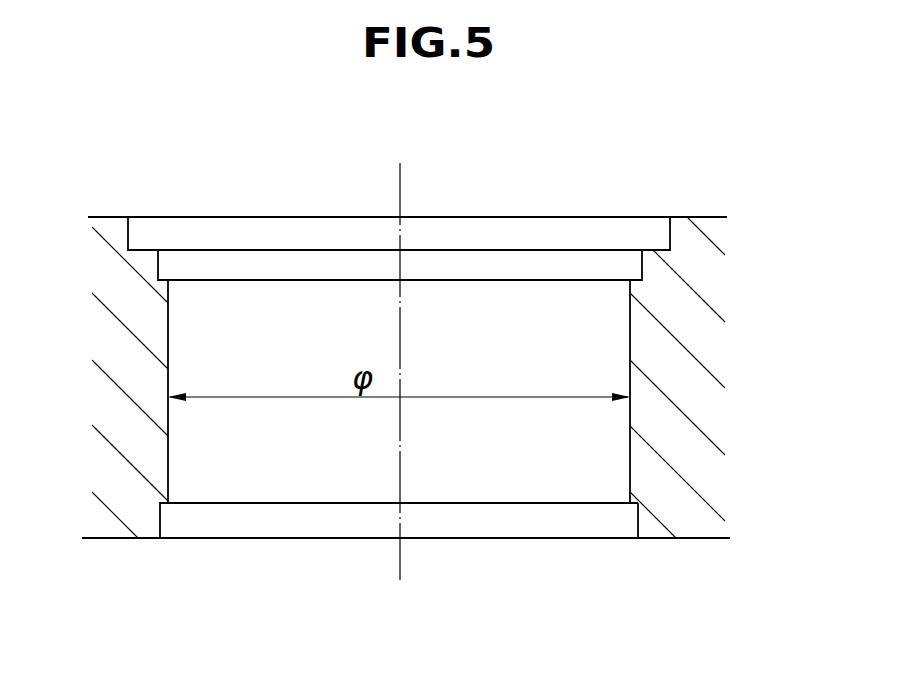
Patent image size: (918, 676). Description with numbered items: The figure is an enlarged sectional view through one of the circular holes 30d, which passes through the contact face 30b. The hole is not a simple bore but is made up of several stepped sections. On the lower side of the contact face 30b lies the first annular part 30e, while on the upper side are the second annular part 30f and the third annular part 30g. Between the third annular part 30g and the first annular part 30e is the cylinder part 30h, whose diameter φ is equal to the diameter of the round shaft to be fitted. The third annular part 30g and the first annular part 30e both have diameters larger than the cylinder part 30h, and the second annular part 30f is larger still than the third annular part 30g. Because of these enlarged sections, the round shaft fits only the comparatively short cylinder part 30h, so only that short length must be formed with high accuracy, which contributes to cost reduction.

The contact face 30b is at (705, 217).
The second annular part 30f is at (131, 236).
The third annular part 30g is at (162, 265).
The cylinder part 30h is at (168, 443).
The circular hole 30d is at (168, 540).
The first annular part 30e is at (635, 522).